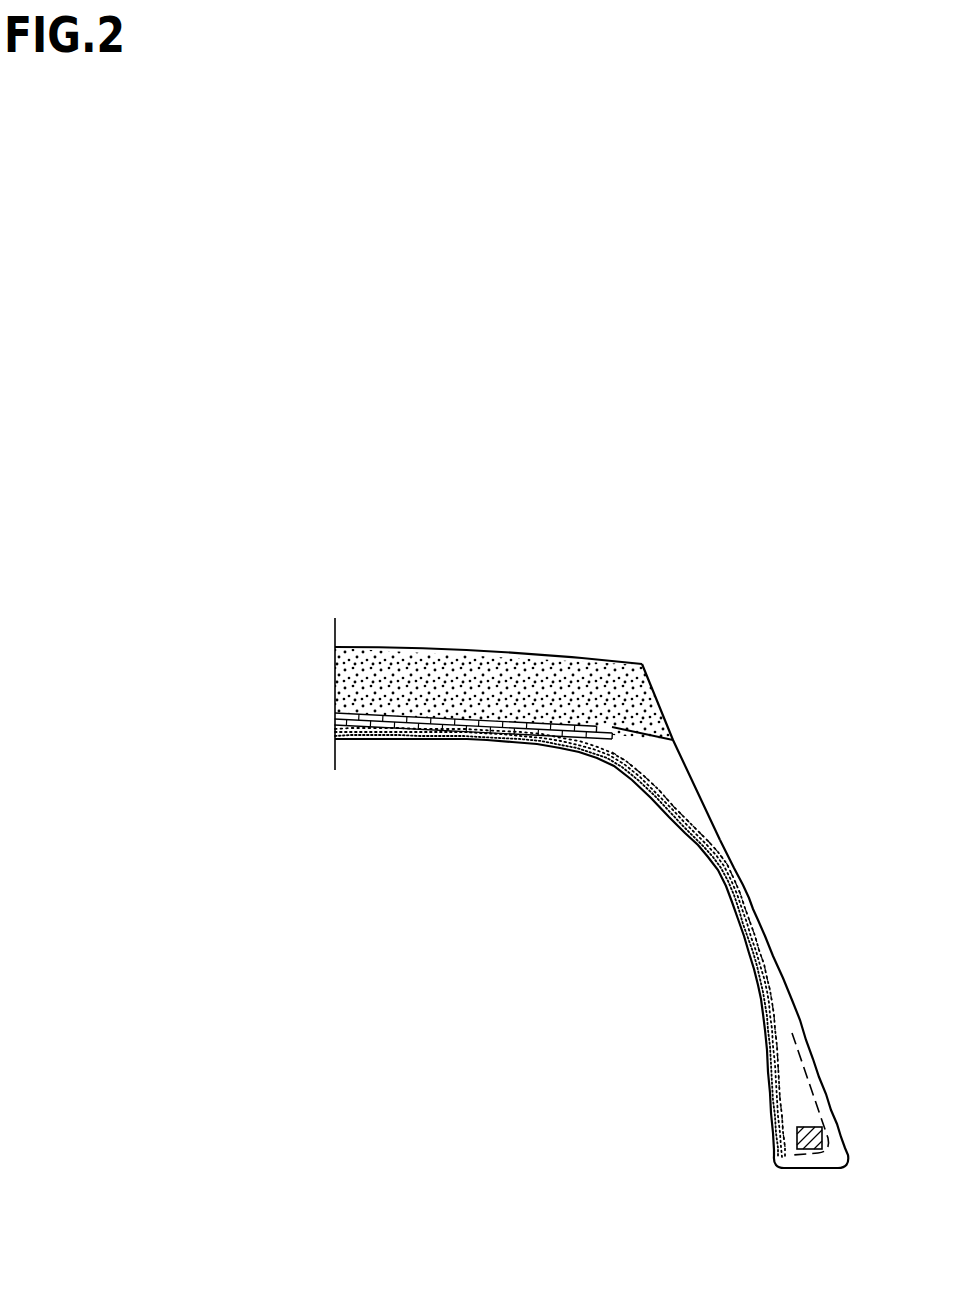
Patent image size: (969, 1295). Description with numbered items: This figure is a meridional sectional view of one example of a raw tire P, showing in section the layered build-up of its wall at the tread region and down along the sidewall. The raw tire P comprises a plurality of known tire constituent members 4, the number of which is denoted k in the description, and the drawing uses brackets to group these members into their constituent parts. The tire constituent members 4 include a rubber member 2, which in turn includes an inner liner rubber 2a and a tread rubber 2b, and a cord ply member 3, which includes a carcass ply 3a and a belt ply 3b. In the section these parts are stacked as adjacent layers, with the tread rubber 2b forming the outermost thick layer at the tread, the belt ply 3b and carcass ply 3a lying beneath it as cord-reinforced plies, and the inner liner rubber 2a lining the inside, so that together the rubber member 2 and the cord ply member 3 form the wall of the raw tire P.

The raw tire P is at (732, 776).
The tire constituent members 4 is at (173, 757).
The rubber member 2 is at (210, 735).
The inner liner rubber 2a is at (398, 740).
The tread rubber 2b is at (352, 690).
The cord ply member 3 is at (210, 857).
The carcass ply 3a is at (612, 768).
The belt ply 3b is at (480, 740).